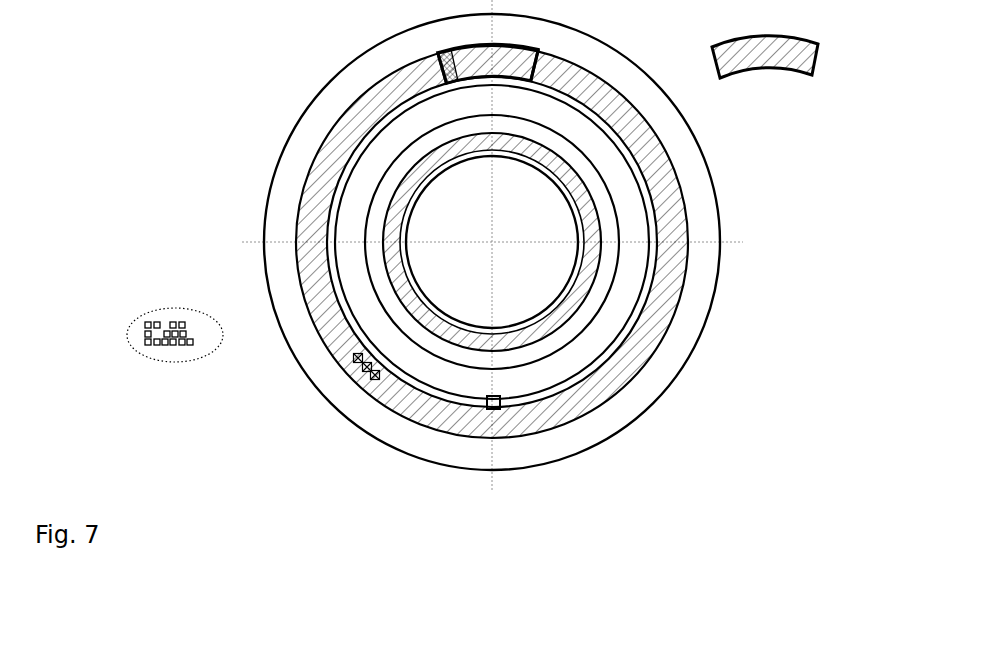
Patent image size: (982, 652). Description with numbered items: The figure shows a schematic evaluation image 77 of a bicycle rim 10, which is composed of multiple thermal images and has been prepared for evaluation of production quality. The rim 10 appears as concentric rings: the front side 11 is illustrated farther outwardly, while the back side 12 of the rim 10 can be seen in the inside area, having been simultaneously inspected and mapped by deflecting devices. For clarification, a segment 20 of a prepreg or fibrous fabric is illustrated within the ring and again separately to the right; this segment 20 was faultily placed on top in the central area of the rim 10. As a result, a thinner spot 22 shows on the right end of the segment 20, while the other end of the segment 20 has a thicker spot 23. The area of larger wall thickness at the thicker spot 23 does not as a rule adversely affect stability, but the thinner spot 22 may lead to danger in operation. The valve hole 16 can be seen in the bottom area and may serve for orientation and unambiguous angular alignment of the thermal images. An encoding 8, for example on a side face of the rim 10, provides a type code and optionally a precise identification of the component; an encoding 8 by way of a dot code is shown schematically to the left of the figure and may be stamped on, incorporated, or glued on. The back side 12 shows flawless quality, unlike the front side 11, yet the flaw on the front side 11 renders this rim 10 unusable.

The evaluation image 77 is at (203, 114).
The rim 10 is at (710, 195).
The front side 11 is at (313, 198).
The back side 12 is at (402, 202).
The valve hole 16 is at (502, 408).
The segment 20 is at (485, 55).
The thinner spot 22 is at (547, 56).
The thicker spot 23 is at (430, 49).
The encoding 8 is at (347, 367).